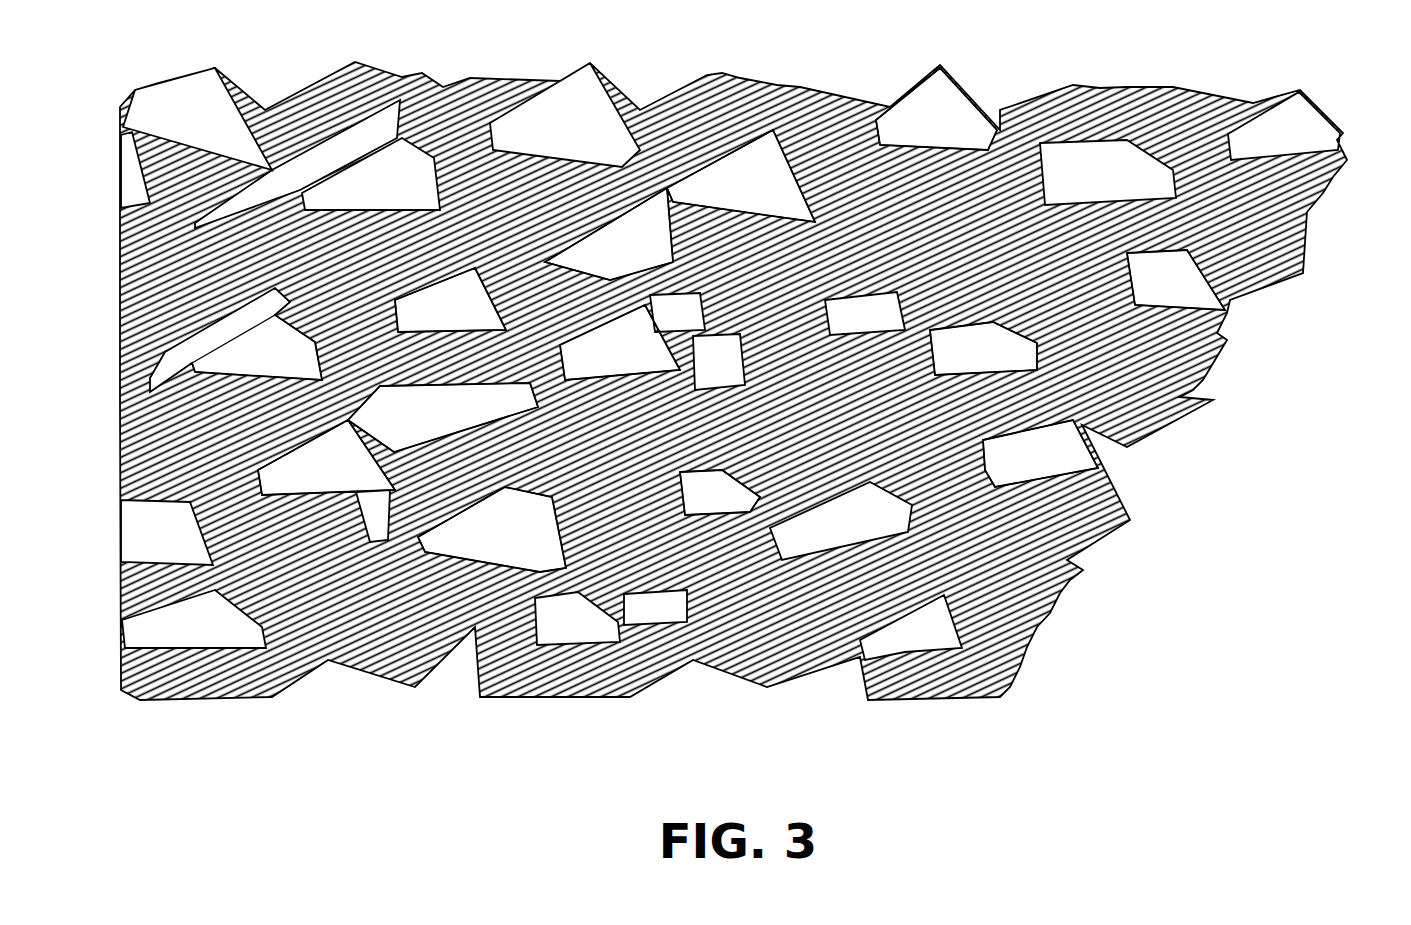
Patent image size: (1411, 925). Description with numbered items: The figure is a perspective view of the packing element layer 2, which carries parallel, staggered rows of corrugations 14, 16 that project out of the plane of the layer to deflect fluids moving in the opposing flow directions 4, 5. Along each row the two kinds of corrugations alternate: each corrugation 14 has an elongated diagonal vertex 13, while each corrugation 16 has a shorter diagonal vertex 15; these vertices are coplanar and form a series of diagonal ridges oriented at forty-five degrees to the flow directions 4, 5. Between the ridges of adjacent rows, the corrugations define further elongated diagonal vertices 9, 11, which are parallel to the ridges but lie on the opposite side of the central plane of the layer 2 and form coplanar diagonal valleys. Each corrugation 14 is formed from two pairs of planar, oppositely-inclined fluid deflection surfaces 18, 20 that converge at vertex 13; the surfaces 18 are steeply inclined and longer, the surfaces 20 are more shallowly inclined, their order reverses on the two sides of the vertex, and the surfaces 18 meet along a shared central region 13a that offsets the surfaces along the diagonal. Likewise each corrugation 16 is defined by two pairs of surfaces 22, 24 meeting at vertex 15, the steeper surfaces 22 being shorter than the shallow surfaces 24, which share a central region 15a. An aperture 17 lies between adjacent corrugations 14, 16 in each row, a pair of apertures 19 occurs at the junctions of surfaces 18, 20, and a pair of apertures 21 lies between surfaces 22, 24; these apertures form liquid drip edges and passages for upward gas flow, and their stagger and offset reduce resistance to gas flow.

The packing element layer 2 is at (1052, 668).
The direction of flow 4 is at (1330, 360).
The direction of flow 5 is at (1323, 405).
The elongated diagonal vertex 9 is at (808, 105).
The elongated diagonal vertex 11 is at (846, 188).
The elongated diagonal vertex 13 is at (925, 252).
The central region of vertex 13a is at (1035, 258).
The corrugation 14 is at (740, 168).
The elongated diagonal vertex 15 is at (797, 263).
The central region of vertex 15a is at (735, 293).
The corrugation 16 is at (447, 288).
The aperture 17 is at (846, 263).
The fluid deflection surface 18 is at (583, 328).
The aperture 19 is at (952, 190).
The fluid deflection surface 20 is at (612, 360).
The aperture 21 is at (785, 245).
The fluid deflection surface 22 is at (300, 407).
The fluid deflection surface 24 is at (296, 483).